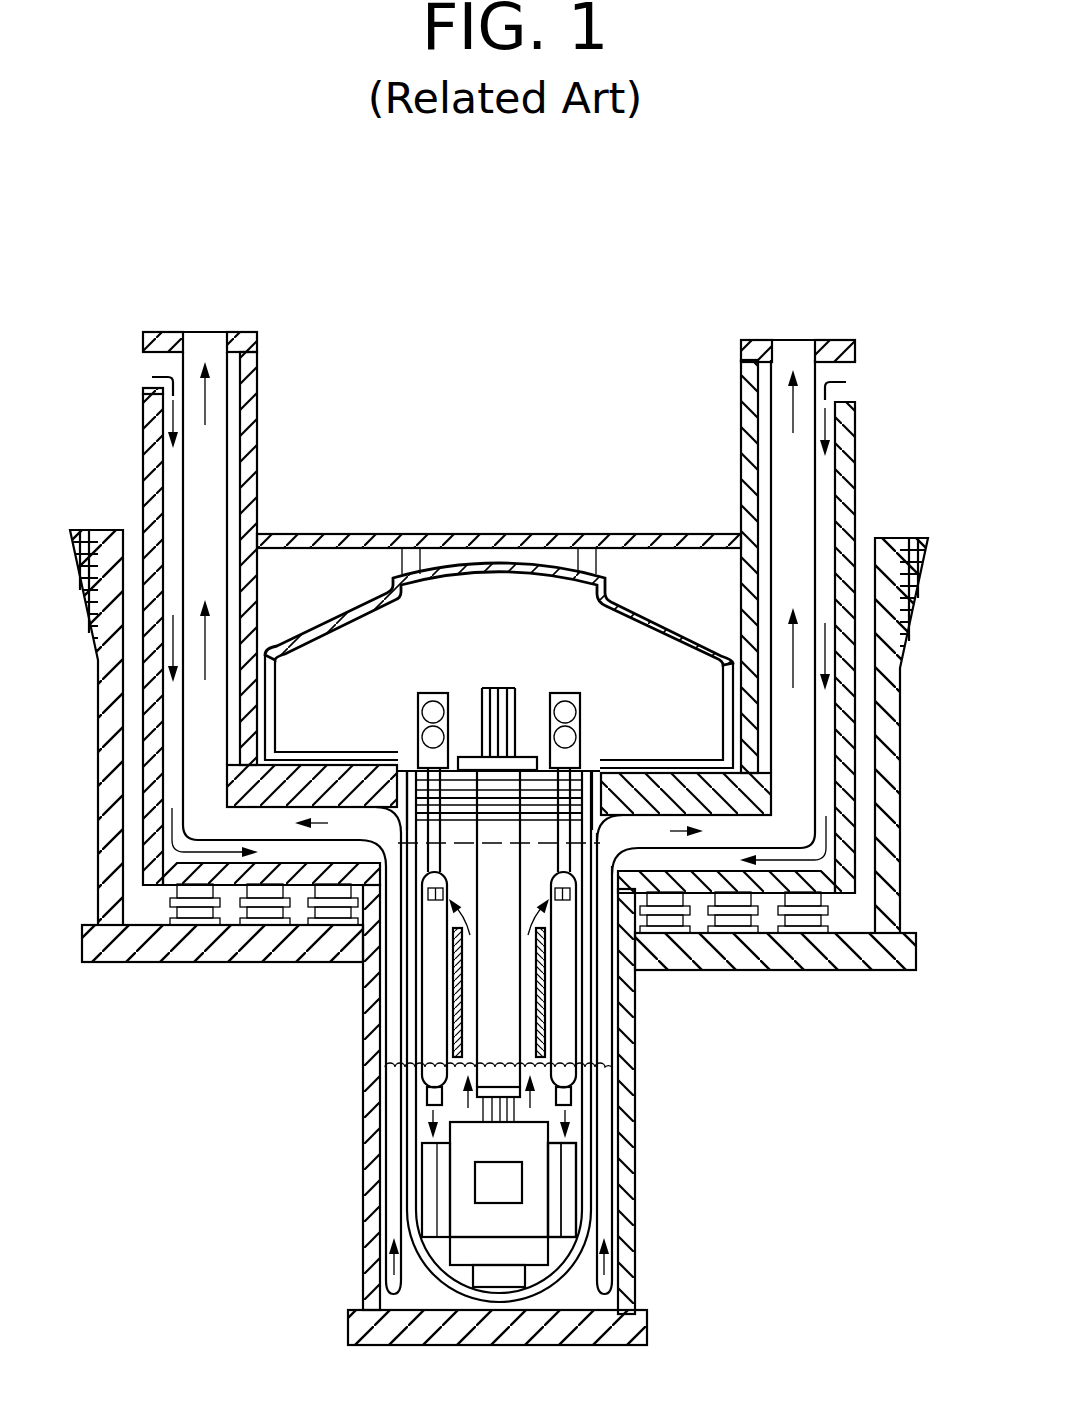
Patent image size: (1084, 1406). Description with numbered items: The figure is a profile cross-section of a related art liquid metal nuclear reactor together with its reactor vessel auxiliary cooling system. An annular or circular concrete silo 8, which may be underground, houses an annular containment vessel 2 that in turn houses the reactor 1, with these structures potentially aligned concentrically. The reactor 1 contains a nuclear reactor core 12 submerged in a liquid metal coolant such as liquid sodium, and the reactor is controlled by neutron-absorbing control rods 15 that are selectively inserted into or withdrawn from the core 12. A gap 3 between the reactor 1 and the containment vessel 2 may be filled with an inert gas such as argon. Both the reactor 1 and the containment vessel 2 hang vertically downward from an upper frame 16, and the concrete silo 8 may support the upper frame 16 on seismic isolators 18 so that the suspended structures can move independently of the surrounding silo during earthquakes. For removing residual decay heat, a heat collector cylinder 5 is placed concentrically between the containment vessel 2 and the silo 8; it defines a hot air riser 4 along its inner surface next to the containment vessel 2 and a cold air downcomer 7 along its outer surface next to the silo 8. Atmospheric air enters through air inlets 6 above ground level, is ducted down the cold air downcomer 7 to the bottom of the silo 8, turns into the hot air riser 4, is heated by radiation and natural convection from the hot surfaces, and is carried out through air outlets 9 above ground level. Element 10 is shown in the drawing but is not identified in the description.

The reactor 1 is at (588, 1122).
The containment vessel 2 is at (590, 1153).
The gap 3 is at (587, 1173).
The hot air riser 4 is at (597, 1220).
The heat collector cylinder 5 is at (603, 1247).
The air inlets 6 is at (138, 377).
The cold air downcomer 7 is at (383, 1187).
The concrete silo 8 is at (370, 1270).
The air outlets 9 is at (217, 310).
The containment dome 10 is at (527, 841).
The nuclear reactor core 12 is at (484, 1198).
The control rods 15 is at (495, 1092).
The upper frame 16 is at (290, 872).
The seismic isolators 18 is at (263, 912).